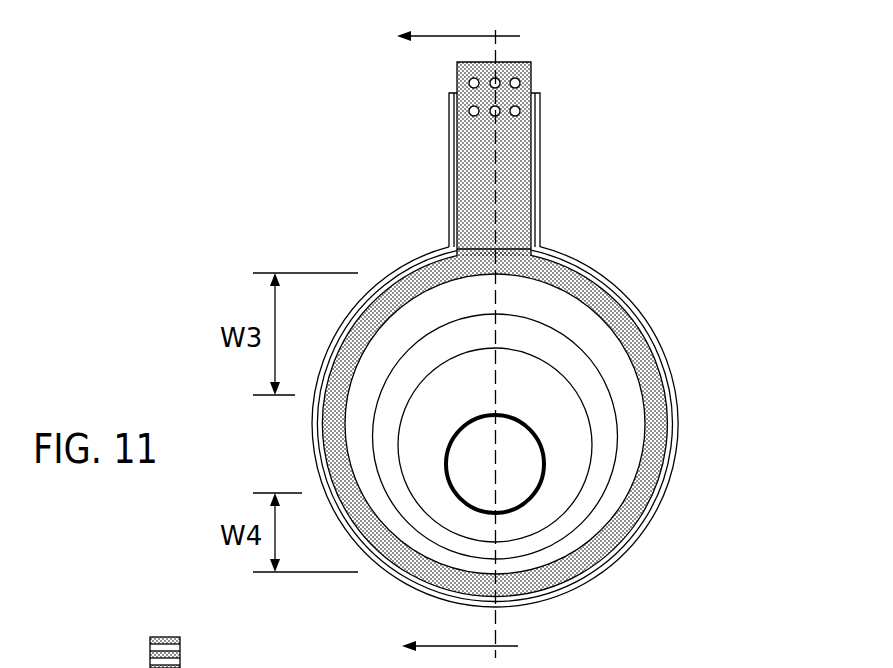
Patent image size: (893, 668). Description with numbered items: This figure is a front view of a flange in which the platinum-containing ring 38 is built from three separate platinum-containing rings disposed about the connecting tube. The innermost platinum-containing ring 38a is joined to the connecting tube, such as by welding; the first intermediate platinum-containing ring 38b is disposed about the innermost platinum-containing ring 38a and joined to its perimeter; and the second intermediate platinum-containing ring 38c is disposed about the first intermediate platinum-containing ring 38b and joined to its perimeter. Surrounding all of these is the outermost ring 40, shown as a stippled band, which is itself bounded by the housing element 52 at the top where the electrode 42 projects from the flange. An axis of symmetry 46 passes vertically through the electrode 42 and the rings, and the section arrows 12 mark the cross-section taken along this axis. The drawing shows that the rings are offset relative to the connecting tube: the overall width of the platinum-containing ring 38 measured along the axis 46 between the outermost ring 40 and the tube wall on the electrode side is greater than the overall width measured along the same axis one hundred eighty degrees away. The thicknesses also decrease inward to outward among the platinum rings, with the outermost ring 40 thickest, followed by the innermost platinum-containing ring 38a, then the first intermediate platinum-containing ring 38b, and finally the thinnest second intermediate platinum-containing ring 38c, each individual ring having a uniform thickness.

The cross-section line 12 is at (433, 340).
The platinum-containing ring 38 is at (642, 358).
The innermost platinum-containing ring 38a is at (573, 461).
The first intermediate platinum-containing ring 38b is at (602, 445).
The second intermediate platinum-containing ring 38c is at (635, 410).
The outermost ring 40 is at (623, 310).
The electrode 42 is at (532, 70).
The axis of symmetry 46 is at (496, 619).
The bracket 52 is at (577, 170).